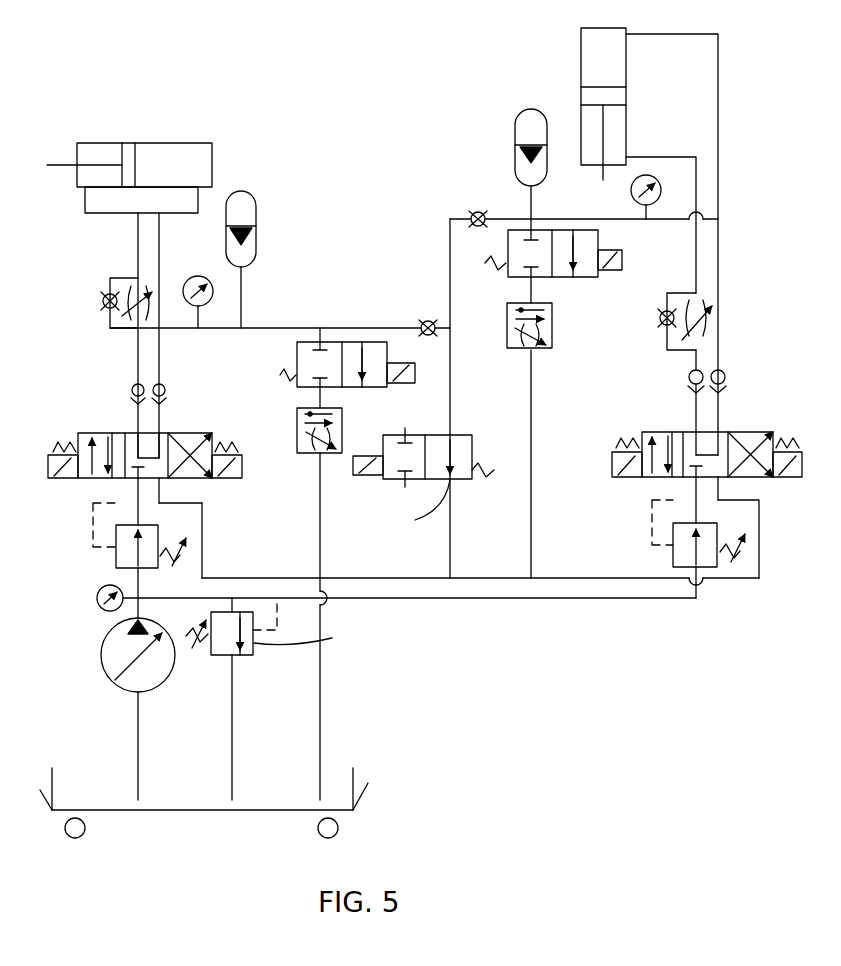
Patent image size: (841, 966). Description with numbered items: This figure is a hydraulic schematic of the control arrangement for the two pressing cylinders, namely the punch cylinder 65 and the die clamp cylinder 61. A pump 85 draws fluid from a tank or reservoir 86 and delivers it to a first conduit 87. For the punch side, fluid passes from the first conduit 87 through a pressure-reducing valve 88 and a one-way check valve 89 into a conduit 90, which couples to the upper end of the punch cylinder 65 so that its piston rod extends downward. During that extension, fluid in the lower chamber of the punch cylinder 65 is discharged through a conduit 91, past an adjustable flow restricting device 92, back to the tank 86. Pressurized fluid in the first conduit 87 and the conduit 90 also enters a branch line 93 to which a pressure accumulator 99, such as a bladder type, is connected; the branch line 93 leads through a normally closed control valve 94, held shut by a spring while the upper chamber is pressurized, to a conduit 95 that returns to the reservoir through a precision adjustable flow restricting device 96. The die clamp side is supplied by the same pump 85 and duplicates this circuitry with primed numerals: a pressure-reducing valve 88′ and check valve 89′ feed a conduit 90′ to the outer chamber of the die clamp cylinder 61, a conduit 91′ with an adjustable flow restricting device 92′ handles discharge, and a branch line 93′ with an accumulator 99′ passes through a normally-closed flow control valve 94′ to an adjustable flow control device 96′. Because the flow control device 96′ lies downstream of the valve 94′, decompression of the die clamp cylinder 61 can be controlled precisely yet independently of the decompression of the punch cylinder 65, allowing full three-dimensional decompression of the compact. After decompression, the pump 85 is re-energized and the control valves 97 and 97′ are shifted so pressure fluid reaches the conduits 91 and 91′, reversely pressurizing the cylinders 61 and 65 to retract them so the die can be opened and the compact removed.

The die clamp cylinder 61 is at (172, 140).
The punch cylinder 65 is at (578, 48).
The pump 85 is at (128, 684).
The tank or reservoir 86 is at (250, 815).
The first conduit 87 is at (533, 599).
The pressure-reducing valve 88 is at (708, 553).
The pressure-reducing valve 88′ is at (116, 548).
The one-way check valve 89 is at (725, 372).
The one-way check valve 89′ is at (165, 384).
The conduit 90 is at (719, 136).
The conduit 90′ is at (160, 266).
The conduit 91 is at (695, 407).
The conduit 91′ is at (138, 420).
The adjustable flow restricting device 92 is at (706, 324).
The adjustable flow restricting device 92′ is at (122, 297).
The branch line 93 is at (548, 228).
The branch line 93′ is at (311, 328).
The normally closed control valve 94 is at (556, 278).
The normally-closed flow control valve 94′ is at (376, 390).
The conduit 95 is at (530, 500).
The precision adjustable flow restricting device 96 is at (541, 350).
The adjustable flow control device 96′ is at (342, 436).
The control valve 97 is at (744, 432).
The control valve 97′ is at (96, 480).
The pressure accumulator 99 is at (514, 127).
The pressure accumulator 99′ is at (257, 216).